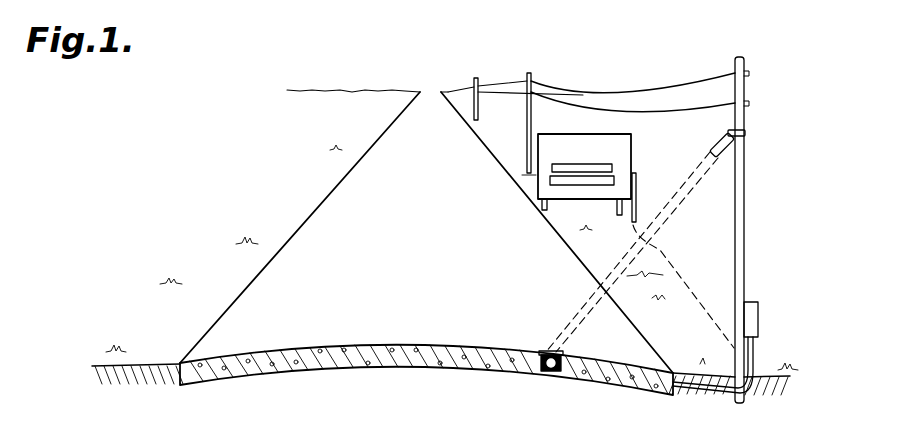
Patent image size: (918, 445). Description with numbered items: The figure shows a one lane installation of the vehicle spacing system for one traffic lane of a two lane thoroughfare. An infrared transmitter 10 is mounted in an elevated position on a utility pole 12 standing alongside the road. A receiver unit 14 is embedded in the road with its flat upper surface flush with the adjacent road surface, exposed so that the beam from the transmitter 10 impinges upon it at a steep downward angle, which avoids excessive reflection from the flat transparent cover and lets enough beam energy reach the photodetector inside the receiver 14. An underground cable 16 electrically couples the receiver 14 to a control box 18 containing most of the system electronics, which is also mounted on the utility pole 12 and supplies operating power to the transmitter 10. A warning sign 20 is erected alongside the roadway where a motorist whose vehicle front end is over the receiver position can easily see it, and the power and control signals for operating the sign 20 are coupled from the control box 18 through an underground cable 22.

The infrared transmitter 10 is at (720, 140).
The utility pole 12 is at (744, 212).
The receiver unit 14 is at (571, 349).
The underground cable 16 is at (700, 396).
The control box 18 is at (758, 310).
The warning sign 20 is at (631, 152).
The underground cable 22 is at (664, 254).